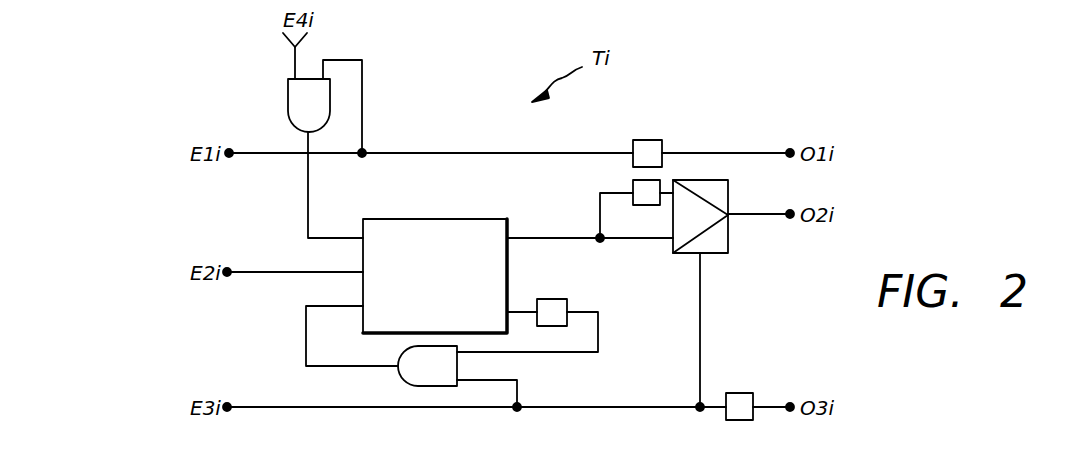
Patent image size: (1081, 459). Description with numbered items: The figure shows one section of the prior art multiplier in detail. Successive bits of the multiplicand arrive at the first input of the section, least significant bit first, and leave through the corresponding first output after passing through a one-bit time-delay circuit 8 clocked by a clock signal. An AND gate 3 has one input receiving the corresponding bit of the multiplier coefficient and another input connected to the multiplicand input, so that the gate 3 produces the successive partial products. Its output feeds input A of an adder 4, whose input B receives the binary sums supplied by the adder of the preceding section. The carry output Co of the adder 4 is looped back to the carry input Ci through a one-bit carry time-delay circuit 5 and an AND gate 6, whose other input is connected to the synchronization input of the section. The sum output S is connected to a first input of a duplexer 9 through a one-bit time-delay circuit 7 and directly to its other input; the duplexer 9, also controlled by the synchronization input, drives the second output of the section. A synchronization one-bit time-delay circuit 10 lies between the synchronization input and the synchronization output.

The AND gate 3 is at (296, 100).
The adder 4 is at (437, 219).
The carry time-delay circuit 5 is at (552, 299).
The AND gate 6 is at (413, 372).
The one-bit time-delay circuit 7 is at (641, 182).
The one-bit time-delay circuit 8 is at (647, 148).
The duplexer 9 is at (728, 192).
The synchronization one-bit time-delay circuit 10 is at (740, 400).